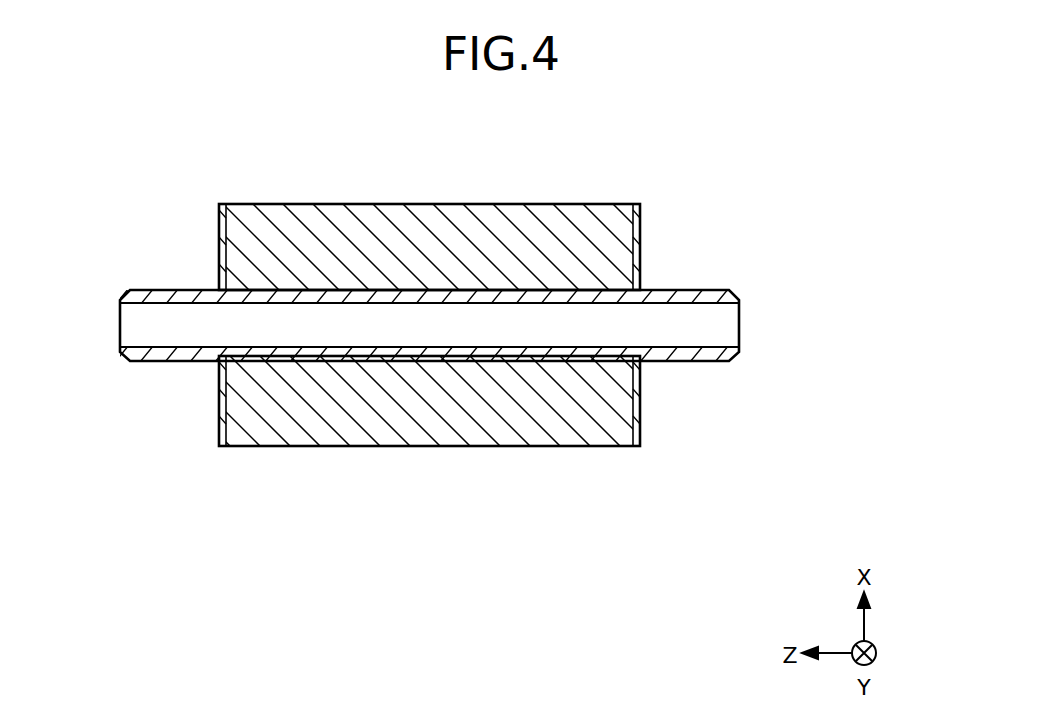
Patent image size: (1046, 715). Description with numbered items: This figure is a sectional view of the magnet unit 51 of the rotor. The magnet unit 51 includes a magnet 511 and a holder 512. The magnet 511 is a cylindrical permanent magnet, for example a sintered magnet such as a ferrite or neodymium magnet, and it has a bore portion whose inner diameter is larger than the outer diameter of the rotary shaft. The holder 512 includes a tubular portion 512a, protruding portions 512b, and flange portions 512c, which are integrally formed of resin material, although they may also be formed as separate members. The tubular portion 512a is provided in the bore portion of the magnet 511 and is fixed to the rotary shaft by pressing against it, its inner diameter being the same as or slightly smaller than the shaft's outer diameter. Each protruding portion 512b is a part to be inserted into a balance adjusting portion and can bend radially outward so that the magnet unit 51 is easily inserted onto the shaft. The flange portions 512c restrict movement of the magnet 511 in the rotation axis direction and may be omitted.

The magnet unit 51 is at (701, 171).
The magnet 511 is at (500, 247).
The holder 512 is at (435, 525).
The tubular portion 512a is at (393, 353).
The protruding portion 512b is at (160, 353).
The flange portion 512c is at (223, 405).